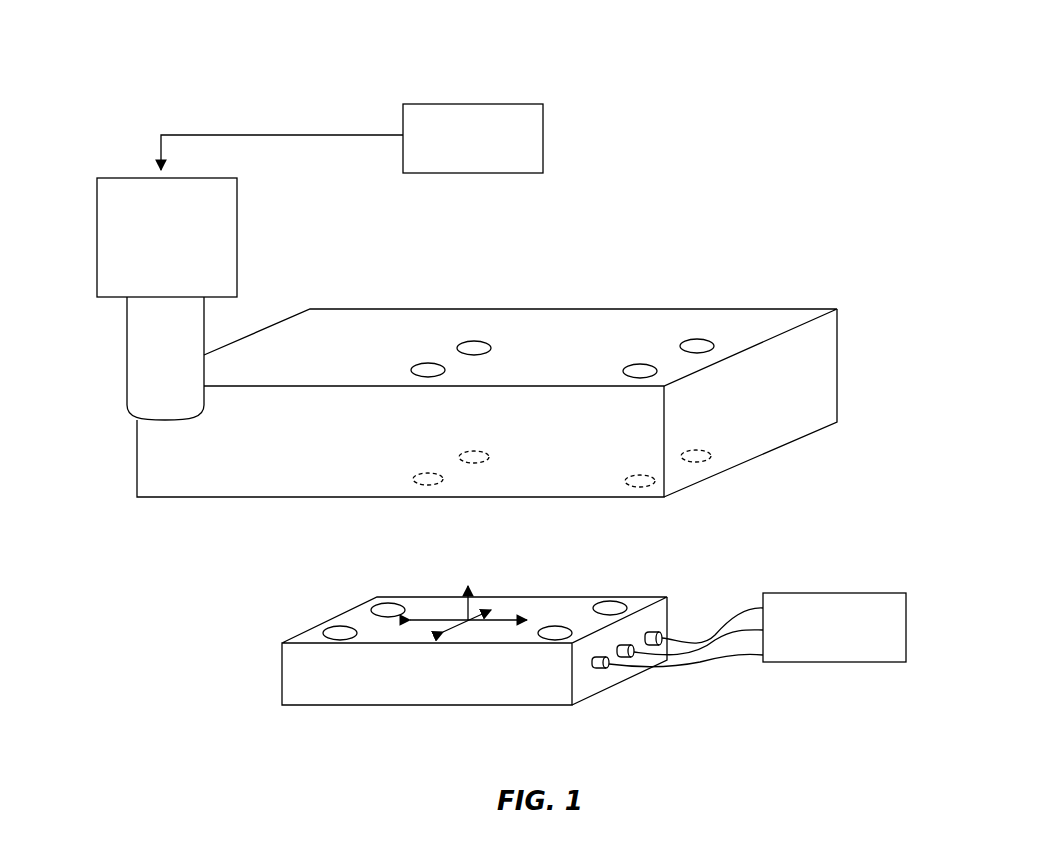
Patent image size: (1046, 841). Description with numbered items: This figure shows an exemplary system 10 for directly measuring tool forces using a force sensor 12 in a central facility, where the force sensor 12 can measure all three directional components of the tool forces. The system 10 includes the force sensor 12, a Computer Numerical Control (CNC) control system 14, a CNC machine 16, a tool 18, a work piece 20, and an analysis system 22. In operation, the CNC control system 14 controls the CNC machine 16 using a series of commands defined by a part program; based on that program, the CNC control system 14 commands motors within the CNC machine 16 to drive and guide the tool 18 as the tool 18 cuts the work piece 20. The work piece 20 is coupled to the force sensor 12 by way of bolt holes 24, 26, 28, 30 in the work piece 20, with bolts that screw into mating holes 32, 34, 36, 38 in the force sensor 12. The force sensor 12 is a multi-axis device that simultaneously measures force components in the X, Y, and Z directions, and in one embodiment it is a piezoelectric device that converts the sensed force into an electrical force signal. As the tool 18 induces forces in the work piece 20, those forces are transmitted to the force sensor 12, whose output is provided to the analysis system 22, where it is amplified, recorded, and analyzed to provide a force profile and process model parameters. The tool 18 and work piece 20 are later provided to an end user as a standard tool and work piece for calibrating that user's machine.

The system 10 is at (774, 60).
The force sensor 12 is at (643, 597).
The CNC control system 14 is at (477, 104).
The CNC machine 16 is at (237, 232).
The tool 18 is at (127, 362).
The work piece 20 is at (708, 309).
The analysis system 22 is at (845, 593).
The bolt hole 24 is at (413, 366).
The bolt hole 26 is at (462, 343).
The bolt hole 28 is at (682, 342).
The bolt hole 30 is at (626, 368).
The mating hole 32 is at (323, 631).
The mating hole 34 is at (377, 603).
The mating hole 36 is at (608, 600).
The mating hole 38 is at (558, 626).